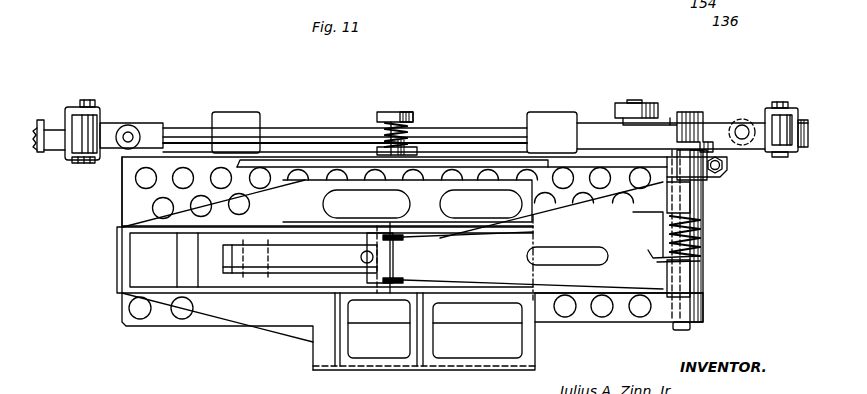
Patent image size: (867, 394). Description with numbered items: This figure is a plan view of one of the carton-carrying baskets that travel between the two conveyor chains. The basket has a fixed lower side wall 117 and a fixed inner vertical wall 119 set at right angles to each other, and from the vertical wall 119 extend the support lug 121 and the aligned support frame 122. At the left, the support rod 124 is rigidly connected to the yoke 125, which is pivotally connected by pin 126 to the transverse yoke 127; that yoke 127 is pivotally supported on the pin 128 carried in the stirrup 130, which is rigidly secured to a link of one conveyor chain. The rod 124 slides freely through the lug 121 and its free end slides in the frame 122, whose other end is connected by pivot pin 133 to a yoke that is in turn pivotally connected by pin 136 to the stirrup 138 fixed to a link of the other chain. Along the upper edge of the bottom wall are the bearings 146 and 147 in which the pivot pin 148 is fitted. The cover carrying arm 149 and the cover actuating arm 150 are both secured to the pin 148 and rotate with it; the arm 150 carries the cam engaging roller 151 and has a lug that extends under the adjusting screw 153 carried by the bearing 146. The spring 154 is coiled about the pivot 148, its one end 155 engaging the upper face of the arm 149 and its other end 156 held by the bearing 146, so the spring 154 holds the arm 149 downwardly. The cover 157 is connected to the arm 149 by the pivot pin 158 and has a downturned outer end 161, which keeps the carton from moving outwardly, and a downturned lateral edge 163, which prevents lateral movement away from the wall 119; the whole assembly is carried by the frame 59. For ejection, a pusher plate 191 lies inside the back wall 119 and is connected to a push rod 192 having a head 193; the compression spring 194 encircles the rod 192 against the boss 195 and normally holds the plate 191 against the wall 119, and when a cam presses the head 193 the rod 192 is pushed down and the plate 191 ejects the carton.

The frame assembly 59 is at (118, 219).
The fixed lower side wall 117 is at (132, 205).
The fixed inner vertical wall 119 is at (300, 167).
The support lug 121 is at (233, 122).
The aligned support frame 122 is at (588, 127).
The support rod 124 is at (182, 132).
The yoke 125 is at (150, 132).
The pin 126 is at (128, 133).
The transverse yoke 127 is at (103, 125).
The pin 128 is at (85, 100).
The stirrup 130 is at (72, 158).
The pivot pin 133 is at (742, 126).
The pin 136 is at (779, 100).
The stirrup 138 is at (793, 107).
The bearing 146 is at (697, 170).
The bearing 147 is at (703, 298).
The pivot pin 148 is at (693, 327).
The cover carrying arm 149 is at (587, 277).
The cover actuating arm 150 is at (663, 120).
The cam engaging roller 151 is at (632, 100).
The adjusting screw 153 is at (727, 163).
The spring 154 is at (702, 230).
The spring end 155 is at (660, 252).
The spring end 156 is at (635, 200).
The cover 157 is at (268, 322).
The pivot pin 158 is at (393, 257).
The downturned outer end 161 is at (122, 268).
The downturned lateral edge 163 is at (405, 367).
The pusher plate 191 is at (512, 160).
The push rod 192 is at (408, 112).
The head 193 is at (388, 112).
The compression spring 194 is at (385, 130).
The boss 195 is at (418, 138).